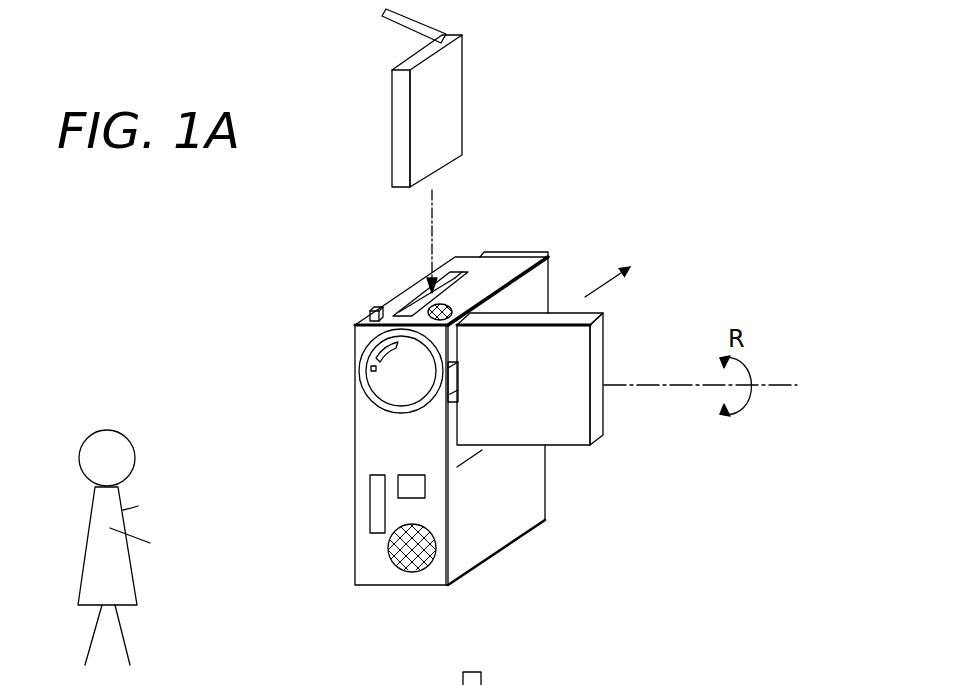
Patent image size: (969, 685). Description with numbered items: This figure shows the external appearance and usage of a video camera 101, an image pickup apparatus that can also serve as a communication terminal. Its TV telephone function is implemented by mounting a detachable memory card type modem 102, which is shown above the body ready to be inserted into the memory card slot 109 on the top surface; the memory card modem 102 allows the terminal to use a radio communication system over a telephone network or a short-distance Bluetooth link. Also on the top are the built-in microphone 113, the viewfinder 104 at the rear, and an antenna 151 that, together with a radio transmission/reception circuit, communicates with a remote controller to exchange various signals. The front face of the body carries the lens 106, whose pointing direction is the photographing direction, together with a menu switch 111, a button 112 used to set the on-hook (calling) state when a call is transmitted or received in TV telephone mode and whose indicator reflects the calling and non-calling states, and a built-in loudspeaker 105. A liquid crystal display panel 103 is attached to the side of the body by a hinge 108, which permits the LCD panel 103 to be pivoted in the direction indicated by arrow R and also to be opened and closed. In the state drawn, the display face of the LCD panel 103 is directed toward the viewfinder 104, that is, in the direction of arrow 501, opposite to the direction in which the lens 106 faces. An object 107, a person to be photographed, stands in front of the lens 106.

The video camera 101 is at (478, 359).
The memory card type modem 102 is at (394, 25).
The liquid crystal display panel 103 is at (604, 348).
The viewfinder 104 is at (525, 250).
The built-in loudspeaker 105 is at (437, 548).
The lens 106 is at (365, 350).
The object 107 is at (112, 430).
The hinge 108 is at (447, 398).
The memory card slot 109 is at (462, 272).
The menu switch 111 is at (369, 484).
The button 112 is at (426, 482).
The built-in microphone 113 is at (400, 298).
The antenna 151 is at (368, 311).
The arrow 501 is at (604, 288).